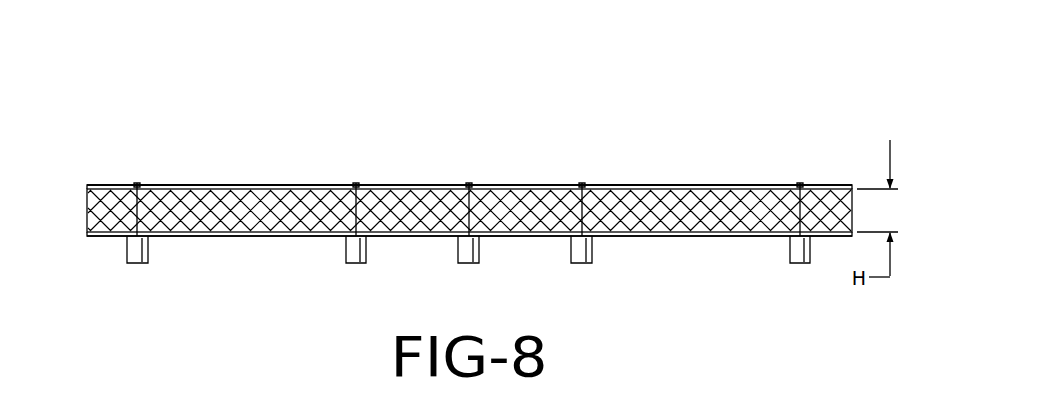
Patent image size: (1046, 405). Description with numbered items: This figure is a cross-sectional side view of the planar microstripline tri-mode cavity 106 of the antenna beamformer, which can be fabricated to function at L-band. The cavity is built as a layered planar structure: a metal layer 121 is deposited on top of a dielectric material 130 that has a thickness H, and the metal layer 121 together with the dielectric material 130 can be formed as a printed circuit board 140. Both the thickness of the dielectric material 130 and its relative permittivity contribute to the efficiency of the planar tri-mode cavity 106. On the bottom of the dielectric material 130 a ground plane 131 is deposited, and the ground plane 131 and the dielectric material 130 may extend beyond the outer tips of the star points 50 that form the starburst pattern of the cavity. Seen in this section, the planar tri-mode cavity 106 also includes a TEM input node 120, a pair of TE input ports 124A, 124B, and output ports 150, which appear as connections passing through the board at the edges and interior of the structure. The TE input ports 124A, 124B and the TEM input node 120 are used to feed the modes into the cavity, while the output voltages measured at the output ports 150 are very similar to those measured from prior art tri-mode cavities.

The planar microstripline tri-mode cavity 106 is at (566, 82).
The TEM input node 120 is at (469, 183).
The metal layer 121 is at (664, 183).
The TE input port 124A is at (356, 183).
The TE input port 124B is at (582, 183).
The dielectric material 130 is at (84, 190).
The ground plane 131 is at (670, 238).
The printed circuit board 140 is at (250, 180).
The output port 150 is at (137, 183).
The star point 50 is at (183, 183).